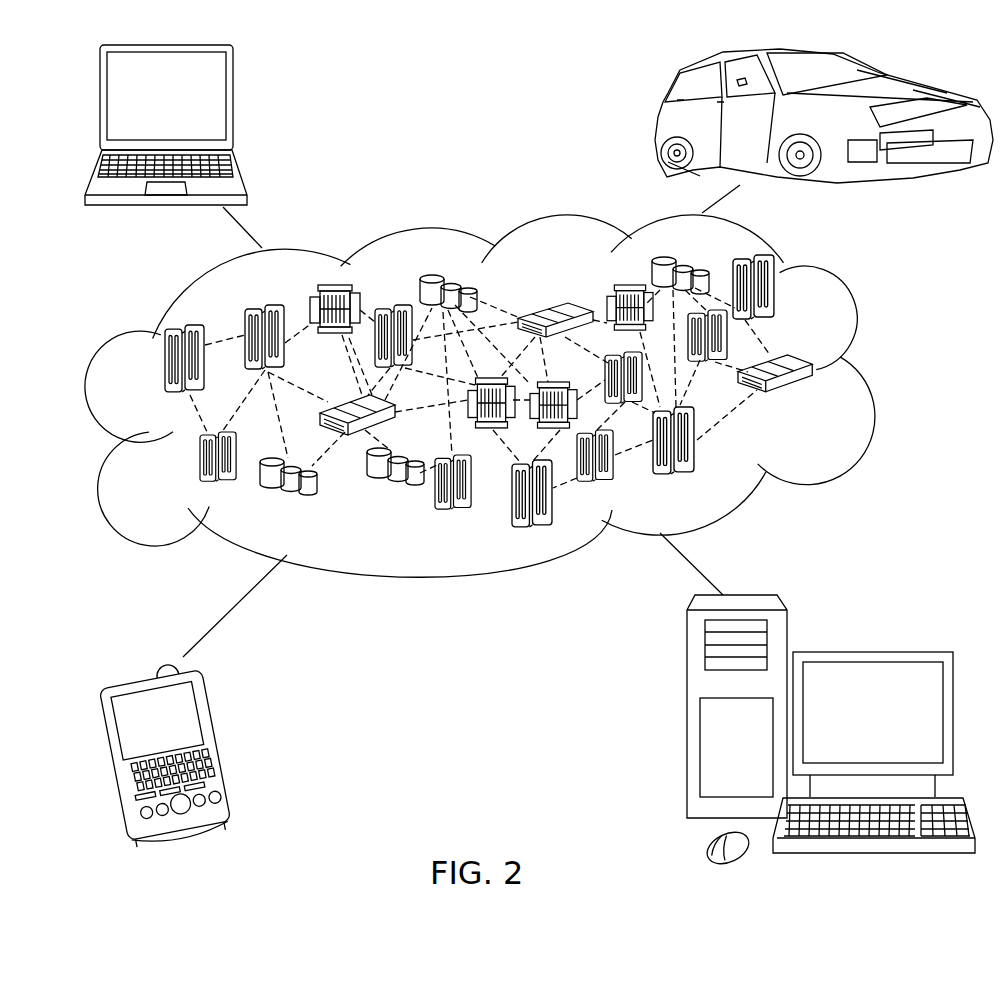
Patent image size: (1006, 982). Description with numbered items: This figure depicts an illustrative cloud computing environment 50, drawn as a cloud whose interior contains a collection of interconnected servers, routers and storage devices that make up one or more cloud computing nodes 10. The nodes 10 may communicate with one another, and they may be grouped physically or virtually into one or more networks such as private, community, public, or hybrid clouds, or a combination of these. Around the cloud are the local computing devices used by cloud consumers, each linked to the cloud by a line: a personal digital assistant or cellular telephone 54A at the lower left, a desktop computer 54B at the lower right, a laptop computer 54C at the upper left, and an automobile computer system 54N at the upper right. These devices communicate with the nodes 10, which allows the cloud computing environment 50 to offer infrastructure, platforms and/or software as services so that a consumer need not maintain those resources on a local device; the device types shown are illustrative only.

The cloud computing node 10 is at (816, 402).
The cloud computing environment 50 is at (870, 372).
The personal digital assistant or cellular telephone 54A is at (229, 738).
The desktop computer 54B is at (870, 650).
The laptop computer 54C is at (235, 103).
The automobile computer system 54N is at (655, 122).